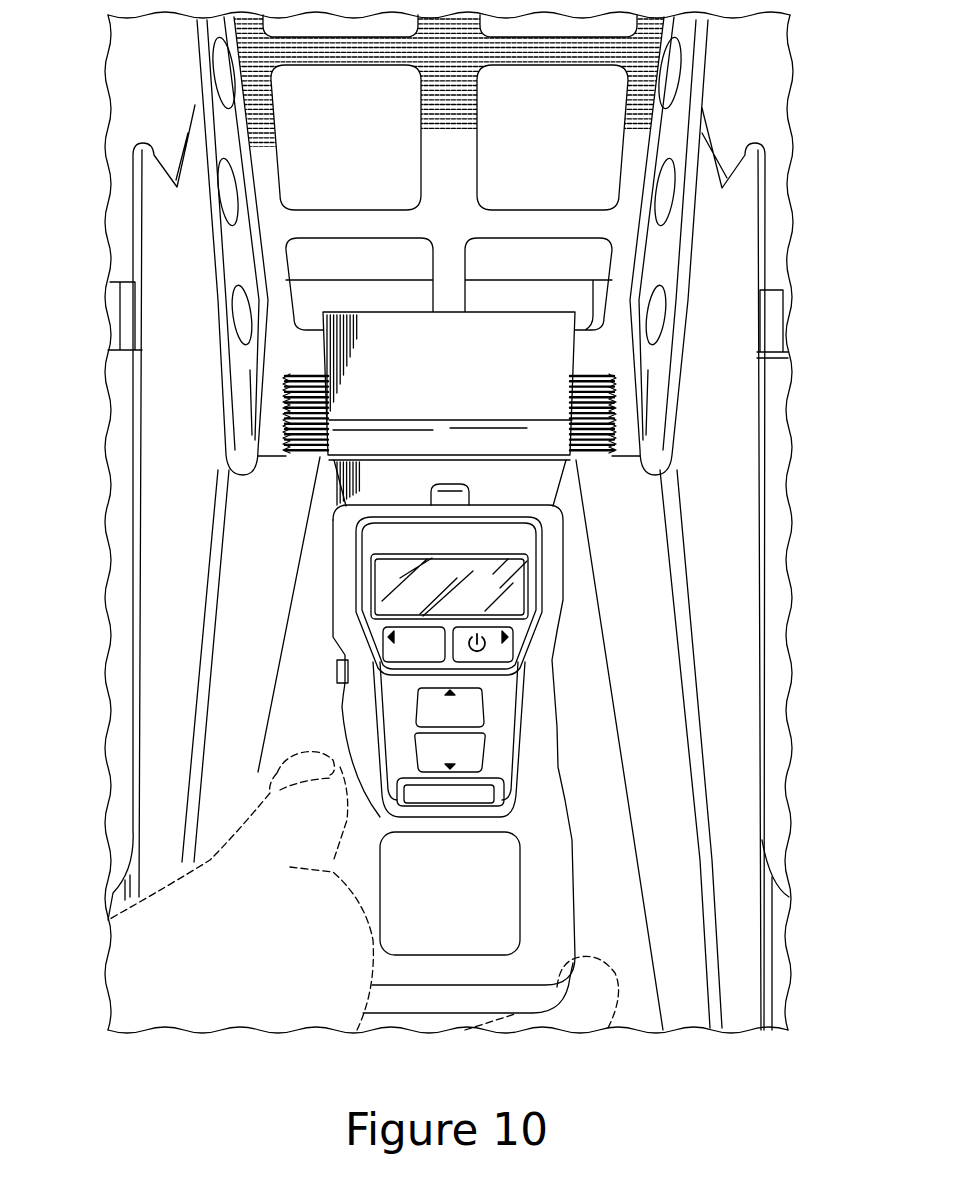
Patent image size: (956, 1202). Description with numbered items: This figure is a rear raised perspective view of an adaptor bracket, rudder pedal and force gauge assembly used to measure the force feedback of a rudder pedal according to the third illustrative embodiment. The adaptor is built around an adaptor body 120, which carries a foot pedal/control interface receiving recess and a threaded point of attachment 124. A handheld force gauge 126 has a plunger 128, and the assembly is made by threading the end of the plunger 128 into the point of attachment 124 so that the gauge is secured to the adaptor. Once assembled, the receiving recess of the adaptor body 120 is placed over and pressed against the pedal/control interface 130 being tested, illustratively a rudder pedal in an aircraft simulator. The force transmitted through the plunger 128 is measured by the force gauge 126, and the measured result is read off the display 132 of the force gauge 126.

The adaptor body 120 is at (522, 372).
The point of attachment 124 is at (365, 472).
The force gauge 126 is at (533, 693).
The plunger 128 is at (457, 492).
The pedal/control interface 130 is at (288, 375).
The display 132 is at (493, 577).